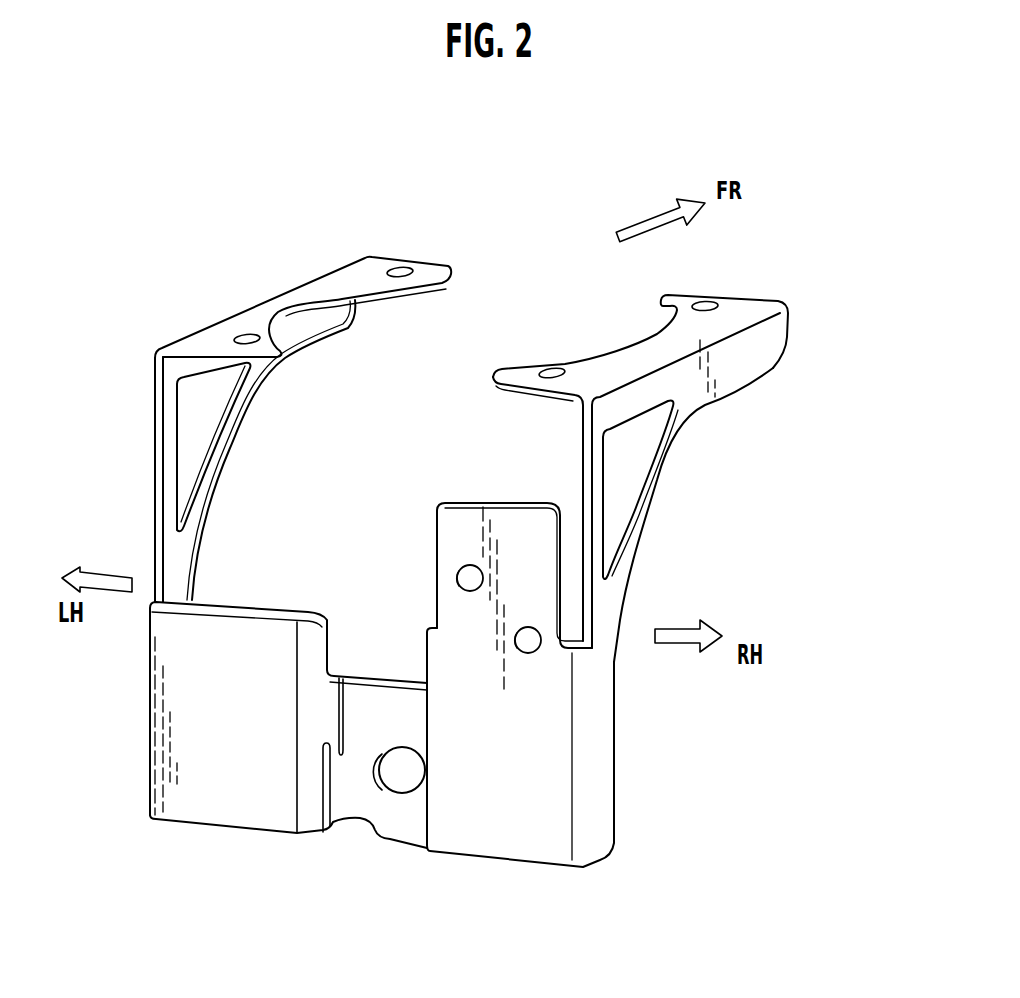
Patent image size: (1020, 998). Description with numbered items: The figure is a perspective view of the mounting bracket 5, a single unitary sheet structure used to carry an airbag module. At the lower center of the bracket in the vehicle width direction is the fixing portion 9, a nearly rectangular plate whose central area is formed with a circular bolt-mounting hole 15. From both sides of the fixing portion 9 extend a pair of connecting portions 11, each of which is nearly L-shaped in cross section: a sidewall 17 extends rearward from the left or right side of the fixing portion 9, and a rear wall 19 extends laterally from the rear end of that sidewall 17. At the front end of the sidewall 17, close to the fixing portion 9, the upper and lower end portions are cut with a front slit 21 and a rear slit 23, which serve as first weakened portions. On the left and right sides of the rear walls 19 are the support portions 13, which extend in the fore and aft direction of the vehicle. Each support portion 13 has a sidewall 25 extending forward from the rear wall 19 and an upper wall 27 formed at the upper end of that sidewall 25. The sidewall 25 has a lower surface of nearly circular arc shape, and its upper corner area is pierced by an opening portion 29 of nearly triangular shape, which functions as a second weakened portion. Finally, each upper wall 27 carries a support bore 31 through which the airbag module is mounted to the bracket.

The mounting bracket 5 is at (274, 379).
The fixing portion 9 is at (406, 818).
The connecting portion 11 is at (274, 760).
The support portion 13 is at (700, 467).
The bolt-mounting hole 15 is at (412, 772).
The sidewall 17 is at (317, 732).
The rear wall 19 is at (218, 753).
The front slit 21 is at (347, 706).
The rear slit 23 is at (325, 778).
The sidewall 25 is at (735, 365).
The upper wall 27 is at (773, 296).
The opening portion 29 is at (200, 419).
The support bore 31 is at (405, 270).